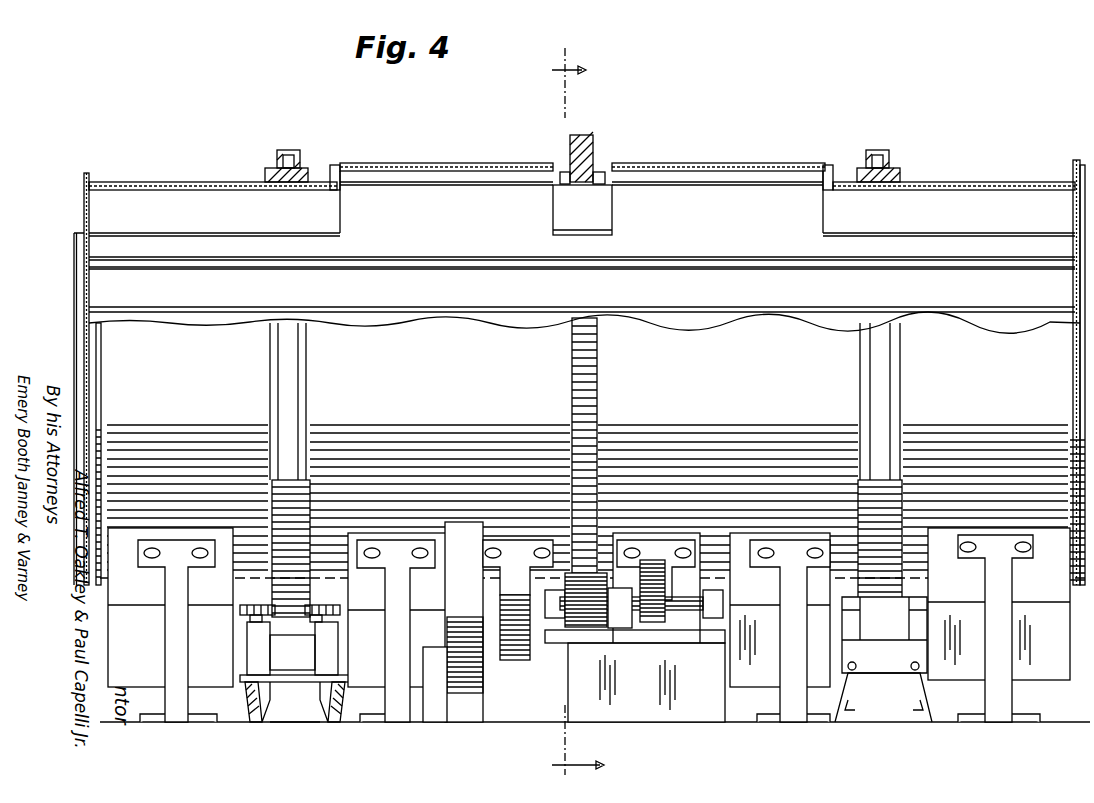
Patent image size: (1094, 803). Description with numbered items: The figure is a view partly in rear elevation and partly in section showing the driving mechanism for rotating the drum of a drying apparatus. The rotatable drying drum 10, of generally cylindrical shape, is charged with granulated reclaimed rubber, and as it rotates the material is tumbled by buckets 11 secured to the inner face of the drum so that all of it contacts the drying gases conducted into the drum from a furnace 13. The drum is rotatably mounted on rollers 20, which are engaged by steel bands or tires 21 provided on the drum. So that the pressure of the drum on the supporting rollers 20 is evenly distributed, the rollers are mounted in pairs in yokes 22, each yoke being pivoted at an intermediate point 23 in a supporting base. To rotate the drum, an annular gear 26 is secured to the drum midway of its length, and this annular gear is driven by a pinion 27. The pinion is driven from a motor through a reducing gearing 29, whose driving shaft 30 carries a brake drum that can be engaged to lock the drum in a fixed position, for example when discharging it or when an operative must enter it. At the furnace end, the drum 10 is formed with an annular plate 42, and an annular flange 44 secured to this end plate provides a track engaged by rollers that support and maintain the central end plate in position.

The rotatable drying drum 10 is at (587, 469).
The buckets 11 is at (345, 262).
The furnace 13 is at (591, 412).
The rollers 20 is at (900, 530).
The steel bands or tires 21 is at (884, 150).
The yokes 22 is at (883, 660).
The pivot 23 is at (843, 655).
The annular gear 26 is at (598, 360).
The pinion 27 is at (600, 570).
The reducing gearing 29 is at (656, 580).
The driving shaft 30 is at (576, 610).
The annular plate 42 is at (84, 207).
The annular flange 44 is at (74, 238).